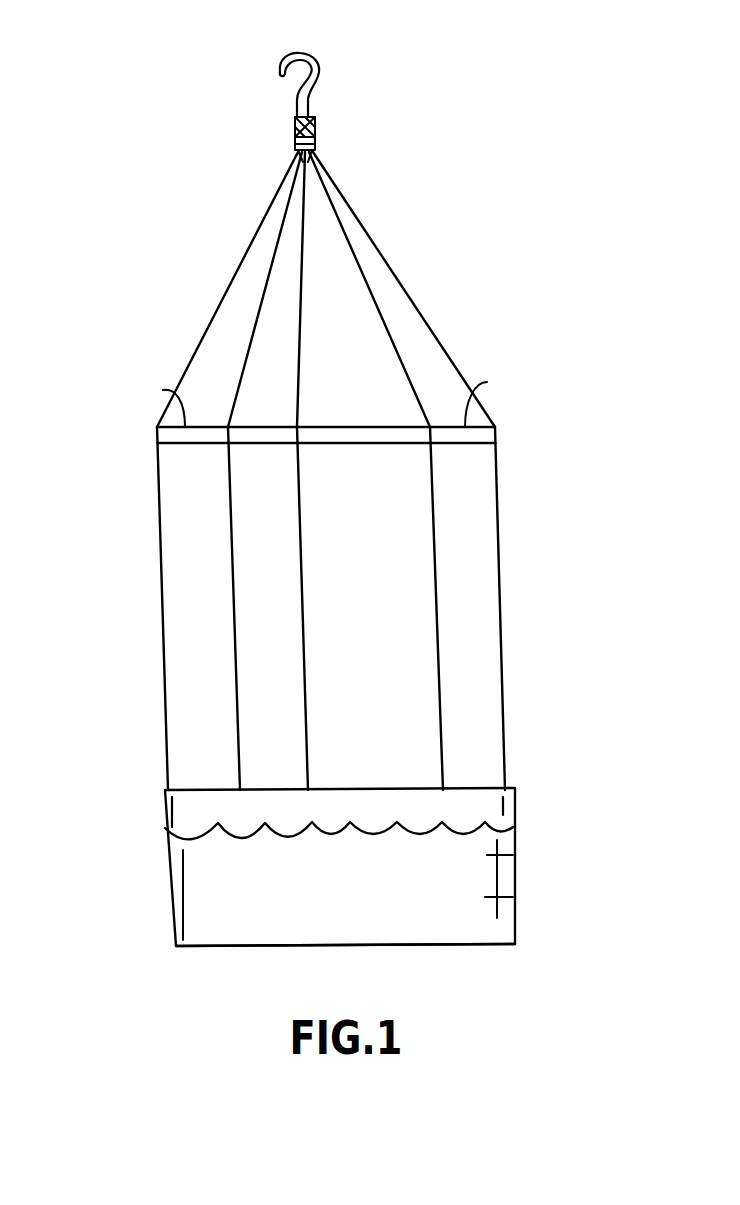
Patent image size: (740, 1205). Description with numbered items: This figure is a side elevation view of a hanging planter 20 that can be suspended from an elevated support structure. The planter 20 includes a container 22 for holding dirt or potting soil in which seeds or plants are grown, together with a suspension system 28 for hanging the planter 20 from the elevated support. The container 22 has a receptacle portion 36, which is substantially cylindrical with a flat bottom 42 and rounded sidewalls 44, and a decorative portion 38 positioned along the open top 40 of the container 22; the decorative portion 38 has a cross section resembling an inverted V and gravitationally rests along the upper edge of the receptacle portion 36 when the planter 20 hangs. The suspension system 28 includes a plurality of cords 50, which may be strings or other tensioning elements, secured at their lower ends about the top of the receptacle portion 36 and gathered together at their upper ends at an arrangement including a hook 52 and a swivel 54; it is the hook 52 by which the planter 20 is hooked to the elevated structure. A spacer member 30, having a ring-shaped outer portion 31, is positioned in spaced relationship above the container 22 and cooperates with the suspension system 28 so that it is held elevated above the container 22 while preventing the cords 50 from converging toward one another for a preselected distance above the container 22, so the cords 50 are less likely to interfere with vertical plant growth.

The planter 20 is at (537, 593).
The container 22 is at (507, 897).
The suspension system 28 is at (161, 569).
The spacer member 30 is at (163, 390).
The ring-shaped outer portion 31 is at (487, 382).
The receptacle portion 36 is at (513, 852).
The decorative portion 38 is at (492, 803).
The open top 40 is at (207, 790).
The flat bottom 42 is at (203, 955).
The rounded sidewalls 44 is at (178, 877).
The cords 50 is at (250, 338).
The hook 52 is at (320, 82).
The swivel 54 is at (294, 133).